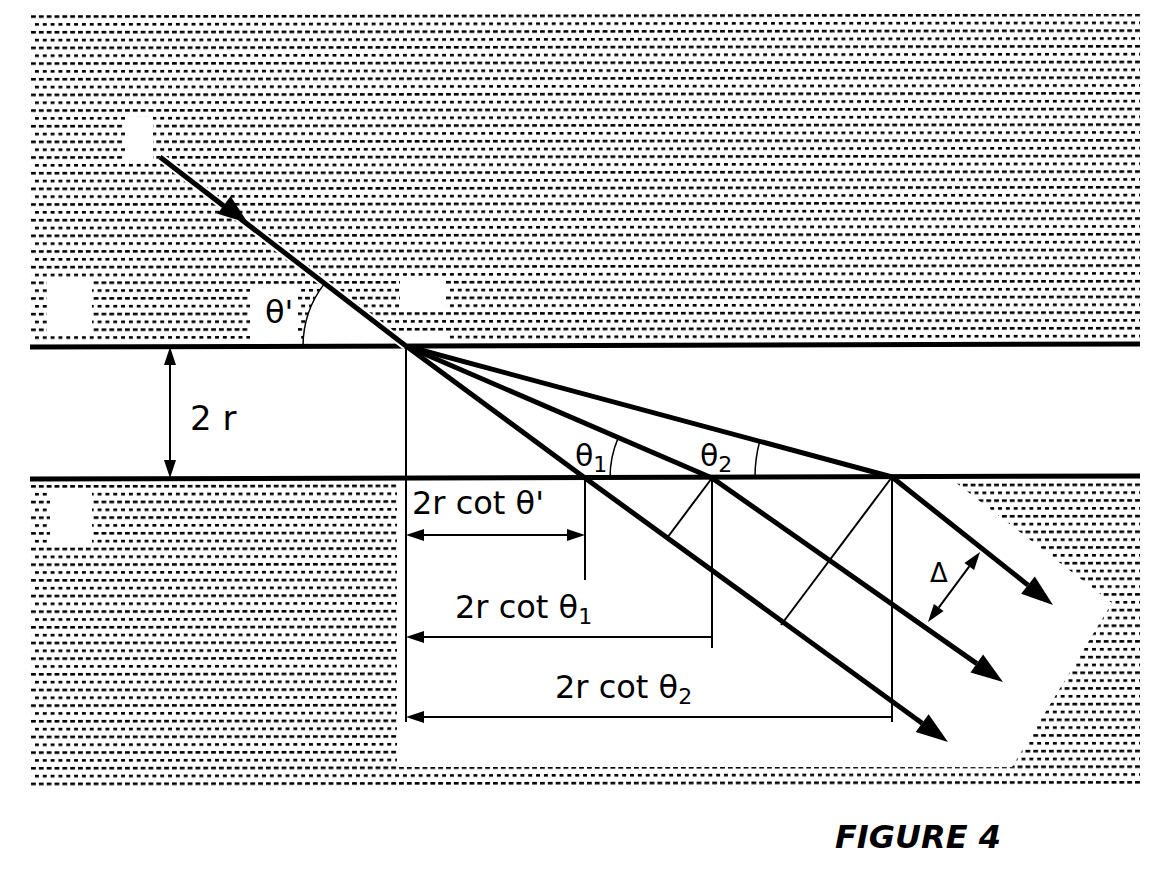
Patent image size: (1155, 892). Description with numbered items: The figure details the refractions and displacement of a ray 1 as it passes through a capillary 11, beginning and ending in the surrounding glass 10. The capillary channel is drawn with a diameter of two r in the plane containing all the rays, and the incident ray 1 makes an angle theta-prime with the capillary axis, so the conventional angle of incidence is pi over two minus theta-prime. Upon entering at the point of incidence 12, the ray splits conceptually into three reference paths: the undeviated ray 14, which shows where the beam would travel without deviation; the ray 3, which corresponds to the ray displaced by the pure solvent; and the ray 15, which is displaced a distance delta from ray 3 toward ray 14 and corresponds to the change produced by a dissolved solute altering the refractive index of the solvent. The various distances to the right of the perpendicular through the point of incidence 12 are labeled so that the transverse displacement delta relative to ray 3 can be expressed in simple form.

The ray 1 is at (268, 235).
The ray displaced by the pure solvent 3 is at (745, 487).
The glass 10 is at (585, 400).
The capillary 11 is at (585, 411).
The point of incidence 12 is at (374, 498).
The undeviated ray 14 is at (702, 556).
The ray displaced by solute refractive index change 15 is at (724, 526).